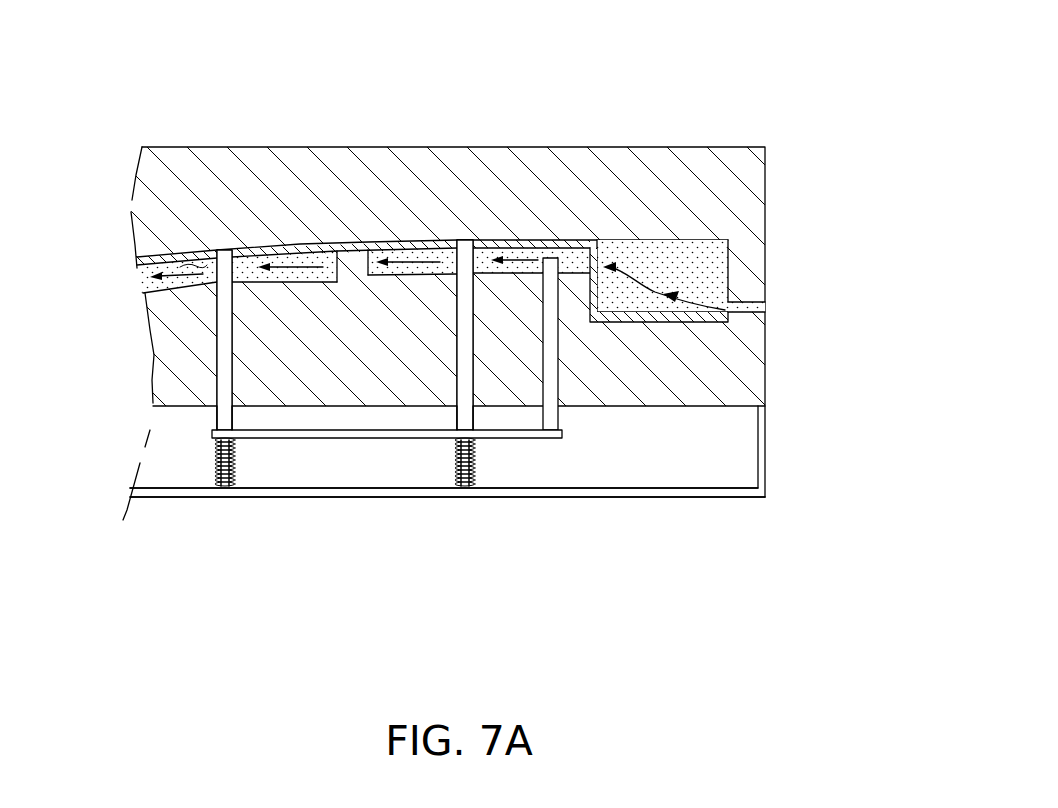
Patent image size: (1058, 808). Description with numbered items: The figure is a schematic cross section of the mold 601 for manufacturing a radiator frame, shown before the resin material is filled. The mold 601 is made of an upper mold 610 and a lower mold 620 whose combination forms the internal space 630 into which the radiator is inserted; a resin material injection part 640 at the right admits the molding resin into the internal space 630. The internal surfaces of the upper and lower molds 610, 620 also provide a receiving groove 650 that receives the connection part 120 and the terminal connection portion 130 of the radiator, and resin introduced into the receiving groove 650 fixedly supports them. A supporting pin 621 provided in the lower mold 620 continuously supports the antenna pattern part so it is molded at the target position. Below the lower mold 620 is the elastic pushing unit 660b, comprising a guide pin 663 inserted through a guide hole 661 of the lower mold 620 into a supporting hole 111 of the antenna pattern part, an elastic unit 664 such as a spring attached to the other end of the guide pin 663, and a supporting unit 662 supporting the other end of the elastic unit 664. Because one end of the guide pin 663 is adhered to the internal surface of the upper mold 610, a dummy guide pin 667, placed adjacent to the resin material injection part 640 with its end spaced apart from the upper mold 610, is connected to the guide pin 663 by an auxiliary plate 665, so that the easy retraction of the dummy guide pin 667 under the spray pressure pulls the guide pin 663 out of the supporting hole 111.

The mold for manufacturing the radiator frame 601 is at (756, 36).
The upper mold 610 is at (537, 172).
The lower mold 620 is at (760, 365).
The internal space 630 is at (200, 253).
The supporting hole 111 is at (220, 250).
The supporting pin 621 is at (353, 263).
The resin material injection part 640 is at (762, 310).
The connection part 120 is at (603, 285).
The receiving groove 650 is at (607, 297).
The terminal connection portion 130 is at (678, 320).
The guide hole 661 is at (220, 335).
The guide pin 663 is at (217, 418).
The elastic unit 664 is at (222, 463).
The supporting unit 662 is at (288, 492).
The auxiliary plate 665 is at (325, 439).
The dummy guide pin 667 is at (545, 333).
The elastic pushing unit 660b is at (404, 367).